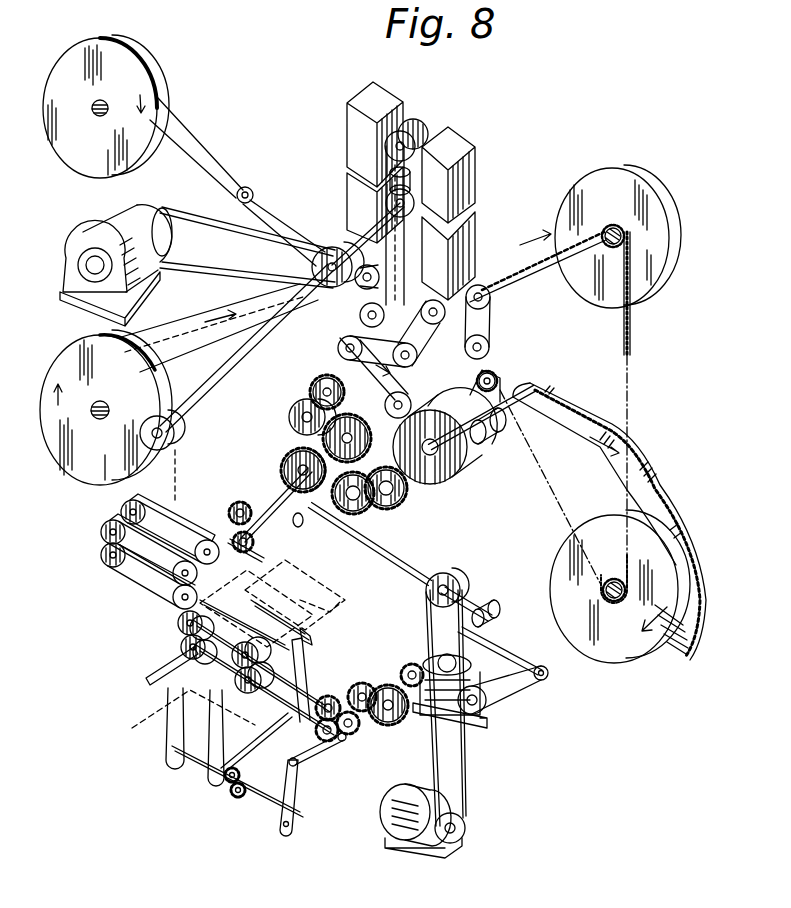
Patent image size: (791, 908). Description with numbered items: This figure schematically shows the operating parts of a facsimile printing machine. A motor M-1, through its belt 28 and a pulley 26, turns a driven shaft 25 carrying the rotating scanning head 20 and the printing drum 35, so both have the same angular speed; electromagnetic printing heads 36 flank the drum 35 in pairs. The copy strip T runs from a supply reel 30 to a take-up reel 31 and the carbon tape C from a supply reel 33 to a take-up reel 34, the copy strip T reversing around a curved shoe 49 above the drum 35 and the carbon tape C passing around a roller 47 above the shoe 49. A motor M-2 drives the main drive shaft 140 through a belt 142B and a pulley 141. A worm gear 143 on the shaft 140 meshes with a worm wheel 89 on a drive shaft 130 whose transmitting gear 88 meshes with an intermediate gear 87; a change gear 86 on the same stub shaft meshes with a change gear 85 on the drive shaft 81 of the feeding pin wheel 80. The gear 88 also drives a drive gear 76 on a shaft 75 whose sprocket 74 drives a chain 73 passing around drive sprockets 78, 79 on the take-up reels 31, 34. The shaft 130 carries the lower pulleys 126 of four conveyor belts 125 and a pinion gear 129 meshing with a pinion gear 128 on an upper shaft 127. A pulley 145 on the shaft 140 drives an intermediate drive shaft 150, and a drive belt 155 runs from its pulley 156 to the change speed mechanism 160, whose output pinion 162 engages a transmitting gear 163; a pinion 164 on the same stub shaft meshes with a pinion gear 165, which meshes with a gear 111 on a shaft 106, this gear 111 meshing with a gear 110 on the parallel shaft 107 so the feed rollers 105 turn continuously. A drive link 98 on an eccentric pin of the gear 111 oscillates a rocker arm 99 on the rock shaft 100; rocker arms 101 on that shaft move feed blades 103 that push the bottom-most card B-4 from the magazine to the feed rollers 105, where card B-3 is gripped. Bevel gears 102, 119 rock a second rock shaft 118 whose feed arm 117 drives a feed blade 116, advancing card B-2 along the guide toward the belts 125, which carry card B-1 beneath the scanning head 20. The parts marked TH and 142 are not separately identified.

The supply reel 33 is at (108, 52).
The carbon tape C is at (196, 128).
The electromagnetic printing heads 36 is at (465, 140).
The roller 47 is at (405, 130).
The curved shoe 49 is at (392, 168).
The printing drum 35 is at (412, 205).
The pulley 26 is at (330, 285).
The belt 28 is at (196, 212).
The motor M-1 is at (110, 222).
The copy strip T is at (195, 304).
The supply reel 30 is at (62, 357).
The driven shaft 25 is at (258, 337).
The scanning head 20 is at (185, 420).
The chain 73 is at (632, 347).
The take-up reel 34 is at (607, 170).
The drive sprocket 78 is at (626, 236).
The take-up reel 31 is at (682, 625).
The drive sprocket 79 is at (615, 605).
The toothed belt TH is at (640, 462).
The drive shaft 81 is at (446, 478).
The feeding pin wheel 80 is at (462, 472).
The transmitting gear 88 is at (360, 440).
The drive gear 76 is at (320, 386).
The sprocket 74 is at (289, 411).
The shaft 75 is at (332, 412).
The worm wheel 89 is at (296, 470).
The change gear 86 is at (365, 512).
The change gear 85 is at (402, 504).
The intermediate transmitting gear 87 is at (352, 515).
The main drive shaft 140 is at (442, 574).
The belt 142B is at (463, 792).
The pulley 142 is at (452, 843).
The motor M-2 is at (400, 838).
The change speed mechanism 160 is at (462, 668).
The pulley 141 is at (462, 580).
The pulley 145 is at (489, 606).
The intermediate drive shaft 150 is at (498, 650).
The pulley 156 is at (544, 680).
The drive belt 155 is at (505, 702).
The pulleys 126 is at (112, 530).
The conveyor belts 125 is at (118, 576).
The pinion gear 128 is at (246, 504).
The shaft 127 is at (236, 532).
The drive shaft 130 is at (281, 500).
The pinion gear 129 is at (250, 540).
The worm gear 143 is at (300, 524).
The business card B-1 is at (242, 575).
The business card B-2 is at (305, 595).
The business card B-3 is at (218, 600).
The business card B-4 is at (132, 728).
The feed rollers 105 is at (178, 623).
The shaft 107 is at (184, 648).
The shaft 106 is at (255, 692).
The feed blade 116 is at (306, 636).
The feed arm 117 is at (296, 670).
The feed blades 103 is at (148, 680).
The gear 110 is at (328, 695).
The gear 111 is at (330, 744).
The pinion gear 165 is at (352, 736).
The pinion 164 is at (360, 682).
The transmitting gear 163 is at (392, 728).
The pinion 162 is at (412, 662).
The rock shaft 118 is at (275, 725).
The rock shaft 100 is at (258, 806).
The bevel gear 119 is at (242, 775).
The bevel gear 102 is at (234, 794).
The rocker arms 101 is at (170, 732).
The rocker arm 99 is at (288, 812).
The drive link 98 is at (320, 768).